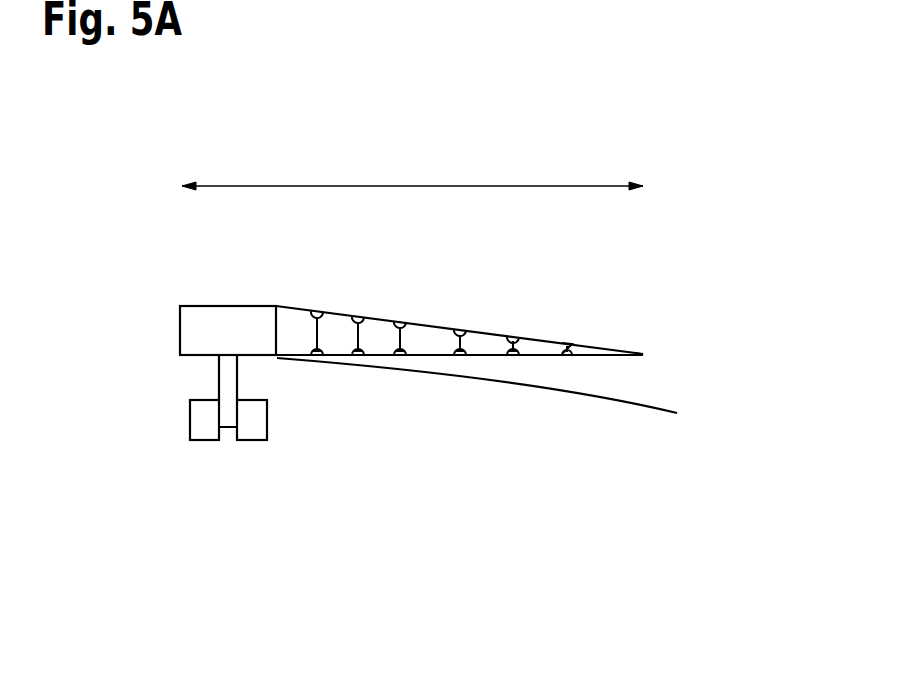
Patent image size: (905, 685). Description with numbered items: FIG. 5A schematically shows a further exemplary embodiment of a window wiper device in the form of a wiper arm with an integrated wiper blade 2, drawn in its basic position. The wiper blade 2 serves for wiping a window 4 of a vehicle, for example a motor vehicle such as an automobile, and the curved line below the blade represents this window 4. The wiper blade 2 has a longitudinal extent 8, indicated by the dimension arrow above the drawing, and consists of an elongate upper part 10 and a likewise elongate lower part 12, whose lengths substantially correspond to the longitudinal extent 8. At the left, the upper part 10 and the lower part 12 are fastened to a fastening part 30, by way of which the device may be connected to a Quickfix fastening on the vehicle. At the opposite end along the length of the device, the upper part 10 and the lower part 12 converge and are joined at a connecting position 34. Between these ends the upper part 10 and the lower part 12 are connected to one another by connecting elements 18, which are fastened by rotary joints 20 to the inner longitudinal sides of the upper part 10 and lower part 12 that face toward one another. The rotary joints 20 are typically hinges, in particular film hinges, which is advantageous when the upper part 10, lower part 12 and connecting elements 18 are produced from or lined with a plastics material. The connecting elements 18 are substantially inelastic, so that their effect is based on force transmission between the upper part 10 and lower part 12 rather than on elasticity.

The wiper blade 2 is at (648, 242).
The window 4 is at (622, 402).
The longitudinal extent 8 is at (397, 186).
The upper part 10 is at (598, 356).
The lower part 12 is at (598, 357).
The connecting elements 18 is at (320, 334).
The rotary joints 20 is at (320, 313).
The fastening part 30 is at (192, 333).
The connecting position 34 is at (647, 355).